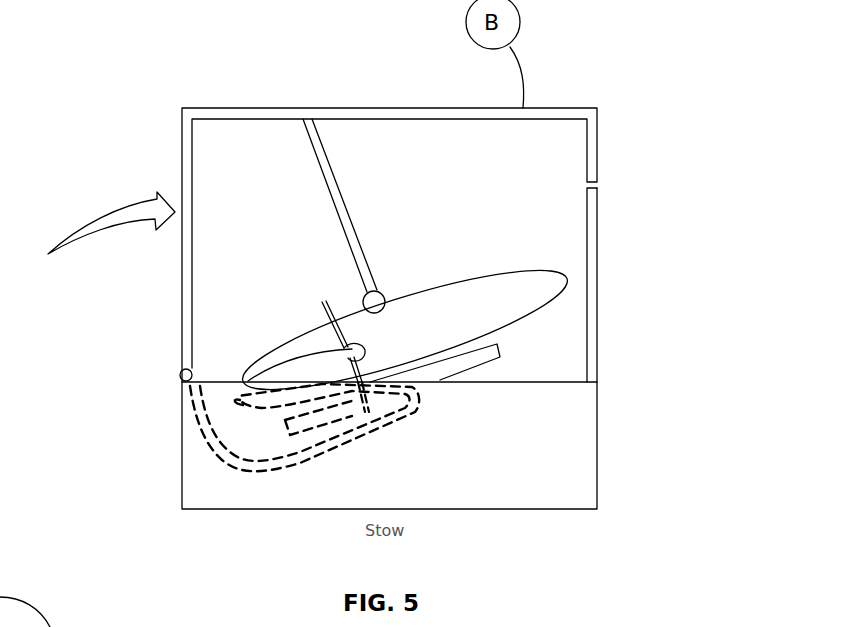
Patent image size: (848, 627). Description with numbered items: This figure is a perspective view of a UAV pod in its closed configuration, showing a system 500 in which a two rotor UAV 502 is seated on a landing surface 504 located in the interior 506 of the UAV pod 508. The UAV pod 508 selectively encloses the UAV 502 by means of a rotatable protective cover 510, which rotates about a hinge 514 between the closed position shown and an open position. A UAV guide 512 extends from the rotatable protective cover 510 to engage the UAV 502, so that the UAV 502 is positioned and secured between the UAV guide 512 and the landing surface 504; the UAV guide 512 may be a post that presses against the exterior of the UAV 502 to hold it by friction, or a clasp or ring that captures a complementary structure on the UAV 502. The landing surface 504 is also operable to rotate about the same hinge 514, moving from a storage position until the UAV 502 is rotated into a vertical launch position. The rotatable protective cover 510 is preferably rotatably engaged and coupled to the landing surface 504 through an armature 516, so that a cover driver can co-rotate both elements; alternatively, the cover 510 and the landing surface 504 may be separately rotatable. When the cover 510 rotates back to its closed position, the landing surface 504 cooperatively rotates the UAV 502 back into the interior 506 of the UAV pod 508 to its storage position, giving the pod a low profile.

The system 500 is at (462, 254).
The two rotor UAV 502 is at (428, 299).
The landing surface 504 is at (472, 368).
The interior 506 is at (543, 153).
The UAV pod 508 is at (599, 420).
The rotatable protective cover 510 is at (322, 107).
The UAV guide 512 is at (333, 205).
The hinge 514 is at (183, 371).
The armature 516 is at (362, 440).